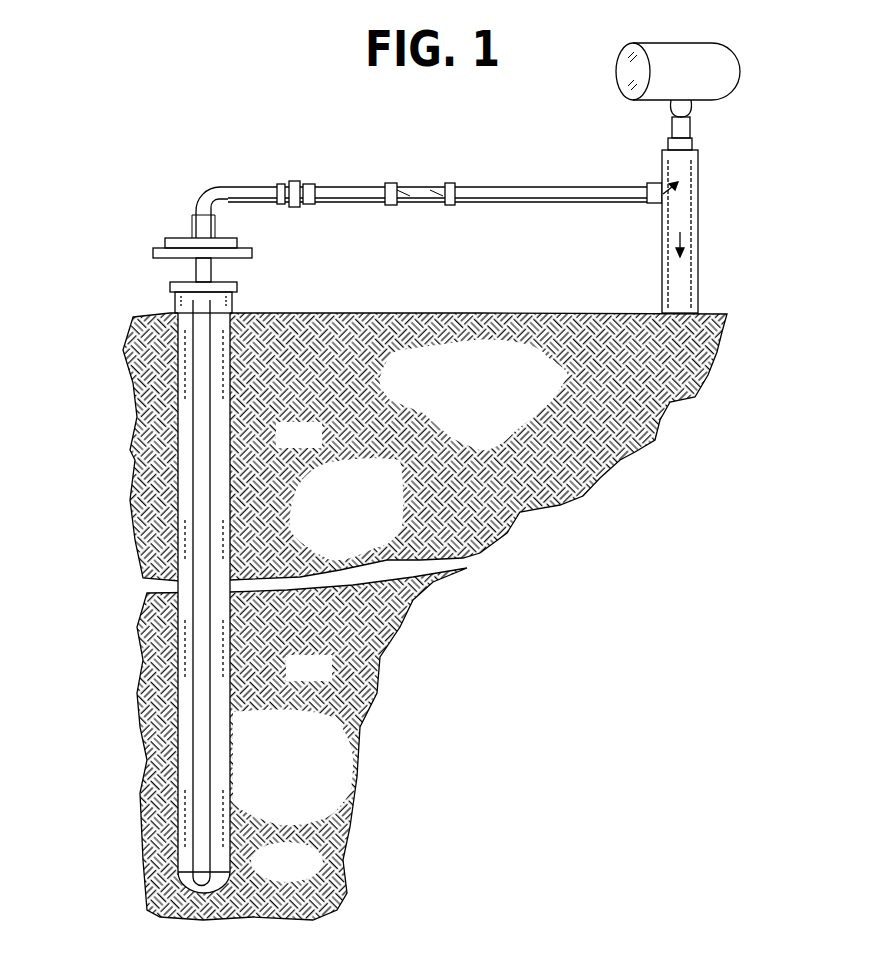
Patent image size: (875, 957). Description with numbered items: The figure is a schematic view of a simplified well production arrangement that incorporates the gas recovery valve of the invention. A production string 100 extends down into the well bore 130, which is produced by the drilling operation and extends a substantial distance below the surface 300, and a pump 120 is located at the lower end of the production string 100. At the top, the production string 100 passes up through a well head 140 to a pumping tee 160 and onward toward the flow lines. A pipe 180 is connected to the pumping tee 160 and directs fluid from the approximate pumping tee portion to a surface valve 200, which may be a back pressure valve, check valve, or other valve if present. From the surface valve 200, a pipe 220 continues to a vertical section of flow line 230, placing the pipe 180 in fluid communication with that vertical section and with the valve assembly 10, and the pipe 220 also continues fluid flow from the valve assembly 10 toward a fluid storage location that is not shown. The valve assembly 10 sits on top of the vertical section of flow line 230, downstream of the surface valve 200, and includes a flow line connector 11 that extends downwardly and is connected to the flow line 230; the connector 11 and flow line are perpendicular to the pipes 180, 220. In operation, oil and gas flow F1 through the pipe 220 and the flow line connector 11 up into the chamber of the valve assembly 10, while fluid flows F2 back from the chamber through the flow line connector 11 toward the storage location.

The valve assembly 10 is at (748, 55).
The flow line connector 11 is at (692, 124).
The production string 100 is at (216, 468).
The pump 120 is at (232, 892).
The well bore 130 is at (220, 707).
The well head 140 is at (172, 284).
The pumping tee 160 is at (253, 253).
The pipe 180 is at (233, 187).
The surface valve 200 is at (306, 184).
The pipe 220 is at (496, 204).
The vertical section of flow line 230 is at (661, 173).
The surface 300 is at (373, 316).
The fluid flow F1 is at (680, 185).
The fluid flow F2 is at (684, 240).